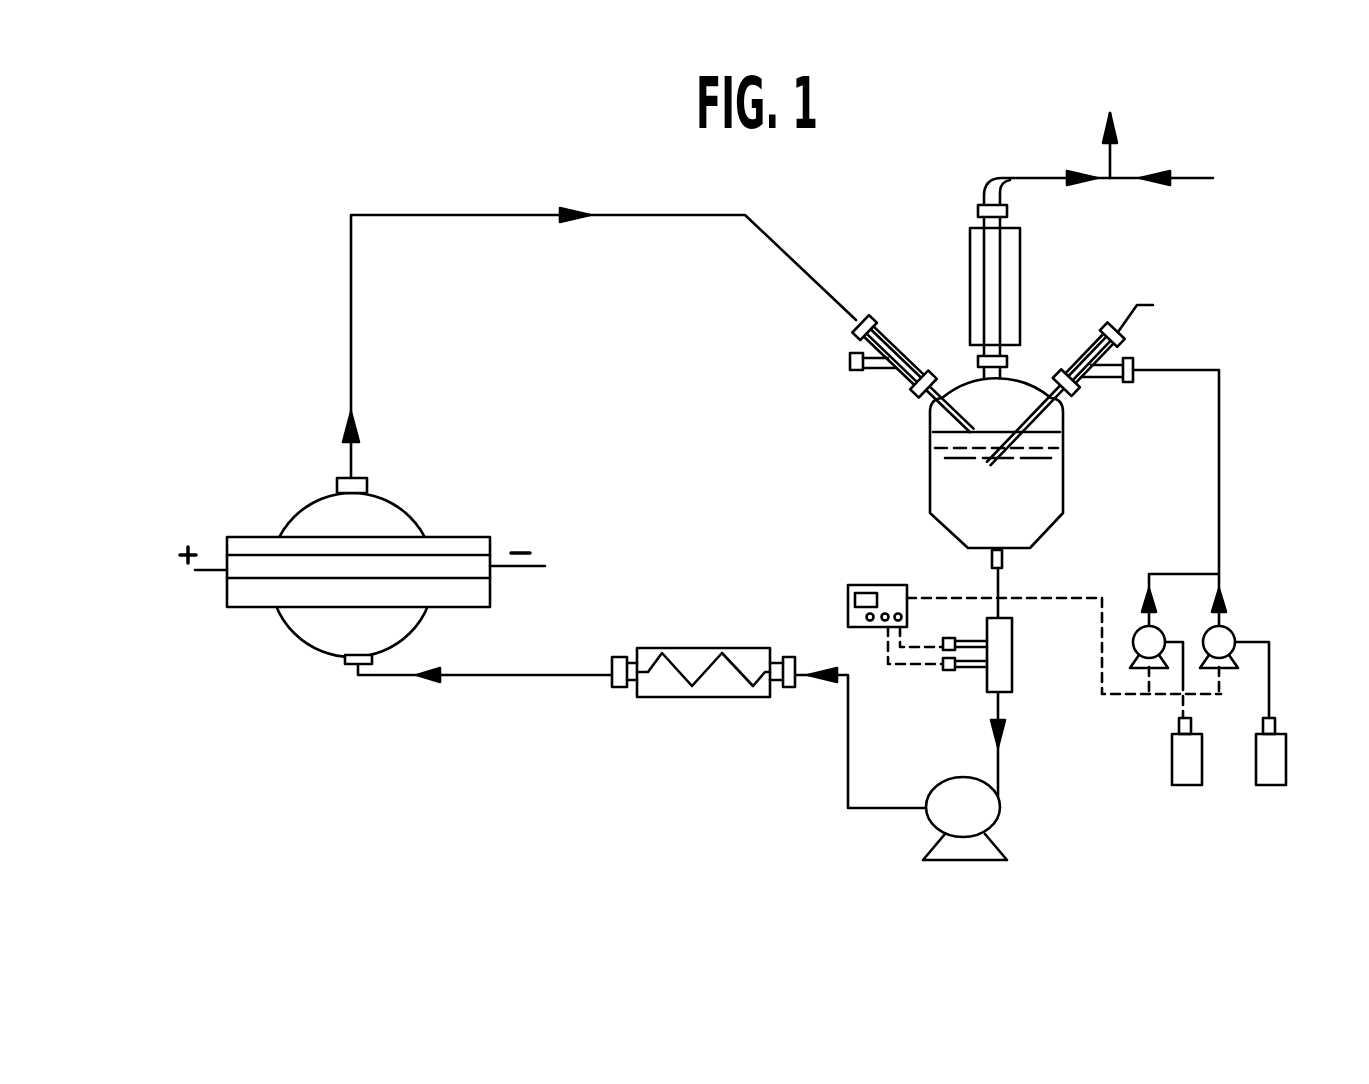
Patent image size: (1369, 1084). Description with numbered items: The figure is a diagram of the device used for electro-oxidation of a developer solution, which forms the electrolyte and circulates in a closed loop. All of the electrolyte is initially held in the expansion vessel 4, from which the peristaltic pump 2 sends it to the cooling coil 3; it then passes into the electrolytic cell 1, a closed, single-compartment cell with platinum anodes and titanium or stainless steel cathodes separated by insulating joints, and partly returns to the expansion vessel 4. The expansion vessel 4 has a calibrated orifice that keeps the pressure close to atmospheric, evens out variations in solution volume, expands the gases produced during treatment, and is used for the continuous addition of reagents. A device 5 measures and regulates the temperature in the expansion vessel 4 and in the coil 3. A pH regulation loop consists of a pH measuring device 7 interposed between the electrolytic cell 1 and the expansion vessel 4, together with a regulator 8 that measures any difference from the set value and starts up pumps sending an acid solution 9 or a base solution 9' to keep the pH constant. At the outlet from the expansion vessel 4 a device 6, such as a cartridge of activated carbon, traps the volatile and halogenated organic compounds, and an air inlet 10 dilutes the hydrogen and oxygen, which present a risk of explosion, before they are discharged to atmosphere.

The electrolytic cell 1 is at (258, 556).
The peristaltic pump 2 is at (963, 790).
The cooling coil 3 is at (682, 648).
The expansion vessel 4 is at (1030, 490).
The temperature measuring and regulating device 5 is at (1083, 366).
The device for trapping VOCs and VOXs 6 is at (993, 283).
The pH measuring device 7 is at (1012, 655).
The regulator 8 is at (867, 585).
The acid solution 9 is at (1175, 748).
The base solution 9' is at (1263, 747).
The air inlet 10 is at (1169, 155).